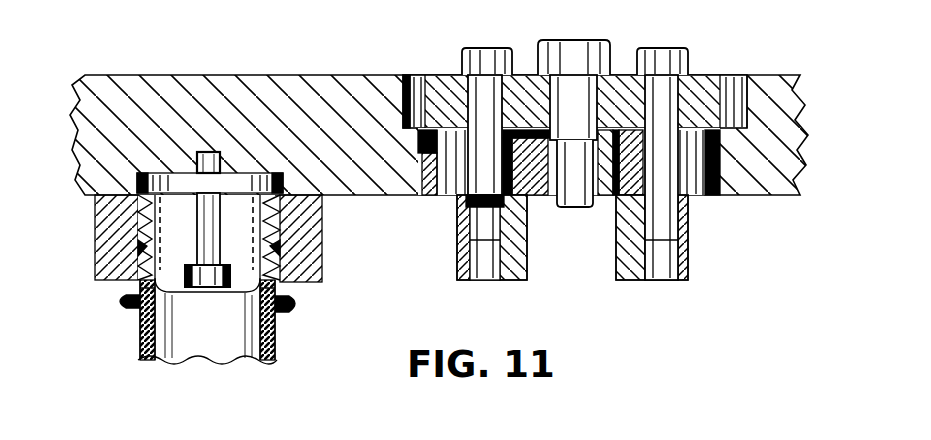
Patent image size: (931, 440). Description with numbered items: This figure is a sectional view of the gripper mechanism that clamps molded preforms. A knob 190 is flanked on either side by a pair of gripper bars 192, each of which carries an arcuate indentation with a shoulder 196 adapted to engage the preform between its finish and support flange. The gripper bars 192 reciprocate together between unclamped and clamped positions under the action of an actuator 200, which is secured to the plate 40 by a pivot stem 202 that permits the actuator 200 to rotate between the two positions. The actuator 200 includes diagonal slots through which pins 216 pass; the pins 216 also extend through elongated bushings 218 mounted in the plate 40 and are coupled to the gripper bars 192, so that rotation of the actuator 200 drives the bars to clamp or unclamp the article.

The plate 40 is at (277, 97).
The knob 190 is at (230, 220).
The gripper bar 192 is at (95, 218).
The shoulder 196 is at (133, 277).
The actuator 200 is at (447, 90).
The pivot stem 202 is at (605, 47).
The pin 216 is at (487, 55).
The elongated bushing 218 is at (527, 208).